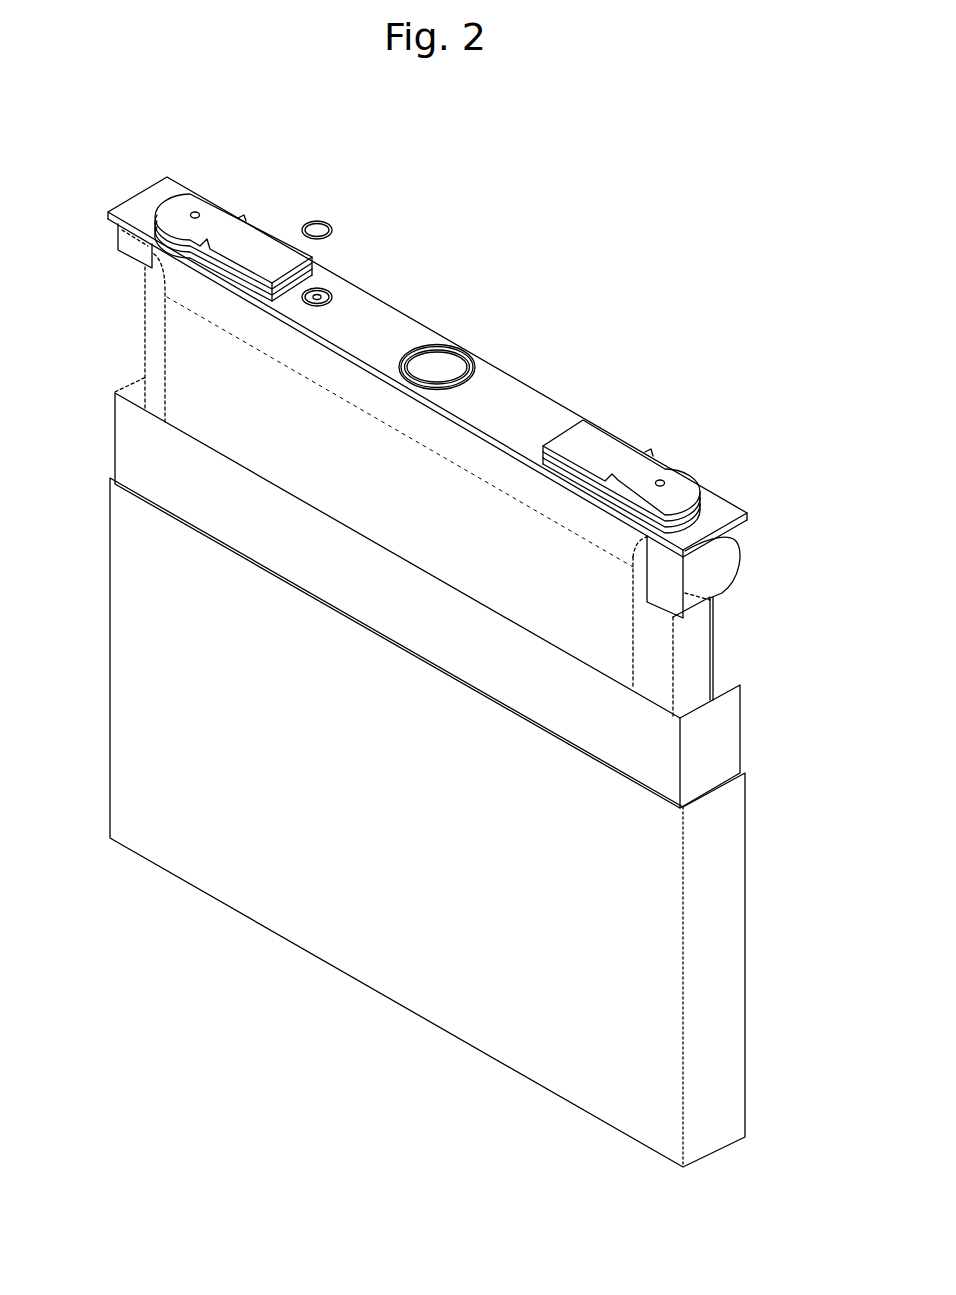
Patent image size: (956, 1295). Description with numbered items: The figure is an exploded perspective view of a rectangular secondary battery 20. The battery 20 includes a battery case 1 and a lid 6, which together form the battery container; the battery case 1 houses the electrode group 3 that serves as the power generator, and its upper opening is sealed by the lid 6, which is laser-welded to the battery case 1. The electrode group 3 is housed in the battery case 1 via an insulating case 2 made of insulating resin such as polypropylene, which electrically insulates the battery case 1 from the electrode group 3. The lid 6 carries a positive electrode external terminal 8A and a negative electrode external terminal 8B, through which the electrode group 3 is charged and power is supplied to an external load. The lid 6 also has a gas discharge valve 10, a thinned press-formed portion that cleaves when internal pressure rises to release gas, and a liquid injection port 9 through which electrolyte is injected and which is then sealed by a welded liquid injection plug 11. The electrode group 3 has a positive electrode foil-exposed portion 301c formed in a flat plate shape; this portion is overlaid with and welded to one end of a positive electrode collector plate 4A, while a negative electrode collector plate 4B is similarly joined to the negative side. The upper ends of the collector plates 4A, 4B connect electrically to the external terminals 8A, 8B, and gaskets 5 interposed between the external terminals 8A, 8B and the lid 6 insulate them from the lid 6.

The battery case 1 is at (287, 855).
The insulating case 2 is at (153, 445).
The electrode group 3 is at (205, 393).
The positive electrode collector plate 4A is at (688, 643).
The negative electrode collector plate 4B is at (152, 318).
The gasket 5 is at (153, 219).
The lid 6 is at (375, 312).
The positive electrode external terminal 8A is at (598, 438).
The negative electrode external terminal 8B is at (218, 210).
The liquid injection port 9 is at (330, 292).
The gas discharge valve 10 is at (445, 353).
The liquid injection plug 11 is at (322, 226).
The rectangular secondary battery 20 is at (660, 250).
The positive electrode foil-exposed portion 301c is at (700, 607).